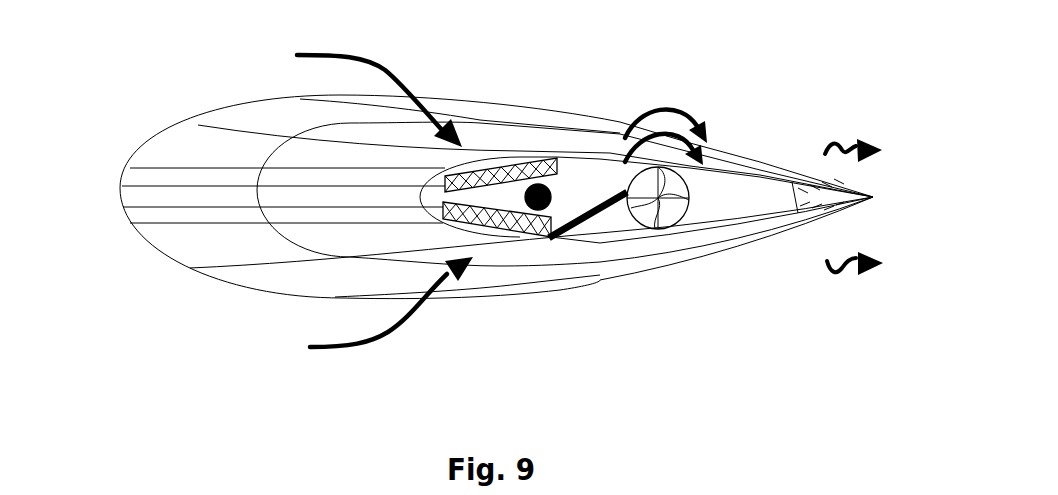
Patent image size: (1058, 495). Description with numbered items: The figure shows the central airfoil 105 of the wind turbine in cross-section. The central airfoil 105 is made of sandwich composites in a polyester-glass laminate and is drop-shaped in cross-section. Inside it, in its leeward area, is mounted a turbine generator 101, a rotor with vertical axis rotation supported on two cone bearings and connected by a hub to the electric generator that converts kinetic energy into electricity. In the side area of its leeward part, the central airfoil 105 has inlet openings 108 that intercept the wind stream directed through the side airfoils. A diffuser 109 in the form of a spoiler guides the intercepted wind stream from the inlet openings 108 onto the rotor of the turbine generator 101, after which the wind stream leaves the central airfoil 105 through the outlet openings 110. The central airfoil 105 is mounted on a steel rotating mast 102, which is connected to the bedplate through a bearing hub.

The central airfoil 105 is at (205, 70).
The turbine generator 101 is at (690, 193).
The rotating mast 102 is at (515, 238).
The inlet openings 108 is at (445, 221).
The diffuser 109 is at (616, 205).
The outlet openings 110 is at (798, 211).